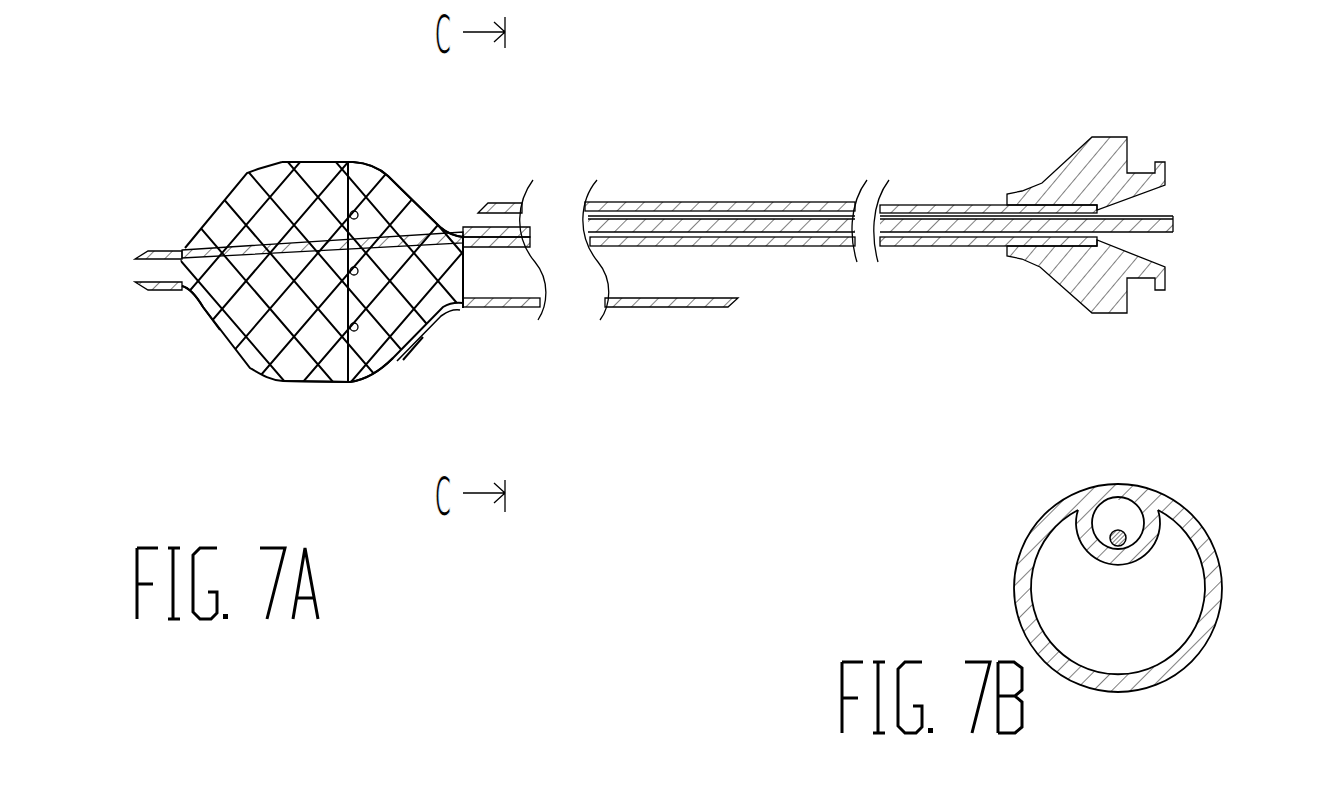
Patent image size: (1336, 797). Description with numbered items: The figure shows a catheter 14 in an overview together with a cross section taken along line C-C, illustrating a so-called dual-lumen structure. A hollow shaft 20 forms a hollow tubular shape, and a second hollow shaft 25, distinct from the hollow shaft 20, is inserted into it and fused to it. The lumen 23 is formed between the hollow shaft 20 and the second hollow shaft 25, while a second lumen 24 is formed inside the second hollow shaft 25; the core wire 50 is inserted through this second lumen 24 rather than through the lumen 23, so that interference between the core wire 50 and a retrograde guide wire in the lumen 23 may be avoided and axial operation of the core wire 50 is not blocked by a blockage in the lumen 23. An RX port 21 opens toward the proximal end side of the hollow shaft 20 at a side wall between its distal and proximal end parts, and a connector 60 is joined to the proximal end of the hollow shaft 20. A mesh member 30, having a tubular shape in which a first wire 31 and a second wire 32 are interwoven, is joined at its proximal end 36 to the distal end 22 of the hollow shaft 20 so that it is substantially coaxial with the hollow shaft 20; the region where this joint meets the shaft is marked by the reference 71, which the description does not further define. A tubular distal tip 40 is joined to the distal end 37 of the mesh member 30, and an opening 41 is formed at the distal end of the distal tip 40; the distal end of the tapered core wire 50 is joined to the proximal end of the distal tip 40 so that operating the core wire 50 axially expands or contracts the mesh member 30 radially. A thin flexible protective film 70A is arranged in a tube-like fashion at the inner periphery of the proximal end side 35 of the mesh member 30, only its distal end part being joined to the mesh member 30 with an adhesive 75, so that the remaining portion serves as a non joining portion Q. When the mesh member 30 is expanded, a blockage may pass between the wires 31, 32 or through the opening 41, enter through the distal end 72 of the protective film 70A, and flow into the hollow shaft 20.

In FIG. 7A, the catheter 14 is at (837, 93).
In FIG. 7A, the hollow shaft 20 is at (610, 308).
In FIG. 7B, the hollow shaft 20 is at (1217, 600).
In FIG. 7A, the RX port 21 is at (753, 283).
In FIG. 7A, the distal end of the hollow shaft 22 is at (464, 232).
In FIG. 7A, the lumen 23 is at (694, 282).
In FIG. 7B, the lumen 23 is at (1132, 653).
In FIG. 7A, the second lumen 24 is at (722, 218).
In FIG. 7B, the second lumen 24 is at (1113, 522).
In FIG. 7A, the second hollow shaft 25 is at (670, 205).
In FIG. 7B, the second hollow shaft 25 is at (1152, 530).
In FIG. 7A, the mesh member 30 is at (262, 160).
In FIG. 7A, the first wire 31 is at (327, 381).
In FIG. 7A, the second wire 32 is at (386, 337).
In FIG. 7A, the proximal end side of the mesh member 35 is at (428, 178).
In FIG. 7A, the proximal end of the mesh member 36 is at (458, 308).
In FIG. 7A, the distal end of the mesh member 37 is at (203, 308).
In FIG. 7A, the distal tip 40 is at (155, 291).
In FIG. 7A, the opening 41 is at (124, 244).
In FIG. 7A, the core wire 50 is at (838, 226).
In FIG. 7B, the core wire 50 is at (1119, 536).
In FIG. 7A, the connector 60 is at (1055, 267).
In FIG. 7A, the protective film 70A is at (386, 195).
In FIG. 7A, the proximal end of stent 71 is at (472, 289).
In FIG. 7A, the distal end of the protective film 72 is at (346, 384).
In FIG. 7A, the adhesive 75 is at (349, 210).
In FIG. 7A, the non joining portion Q is at (423, 373).